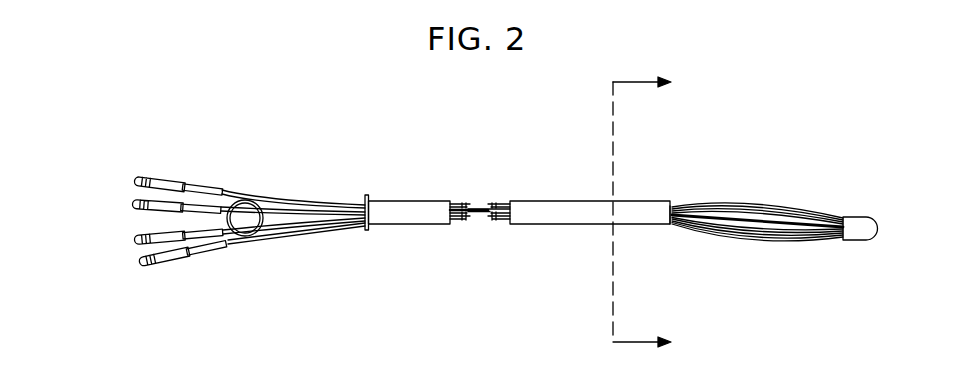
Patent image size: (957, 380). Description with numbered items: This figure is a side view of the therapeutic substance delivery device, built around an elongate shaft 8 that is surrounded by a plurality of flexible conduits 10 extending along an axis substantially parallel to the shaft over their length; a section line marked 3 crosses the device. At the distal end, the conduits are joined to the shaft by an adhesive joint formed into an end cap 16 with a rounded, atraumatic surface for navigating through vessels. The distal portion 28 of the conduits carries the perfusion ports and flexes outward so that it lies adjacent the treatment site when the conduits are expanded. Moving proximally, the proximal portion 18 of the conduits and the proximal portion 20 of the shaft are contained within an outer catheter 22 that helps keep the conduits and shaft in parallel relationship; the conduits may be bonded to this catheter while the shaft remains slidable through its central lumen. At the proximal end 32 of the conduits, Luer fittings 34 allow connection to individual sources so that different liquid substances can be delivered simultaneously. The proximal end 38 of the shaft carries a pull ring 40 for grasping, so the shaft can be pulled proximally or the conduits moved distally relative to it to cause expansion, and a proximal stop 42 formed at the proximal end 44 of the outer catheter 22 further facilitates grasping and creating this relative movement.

The section line 3- 3 is at (642, 214).
The elongate shaft 8 is at (767, 220).
The flexible conduits 10 is at (714, 194).
The end cap 16 is at (865, 217).
The proximal portion of the conduits 18 is at (495, 202).
The proximal portion of the shaft 20 is at (482, 214).
The outer catheter 22 is at (567, 217).
The distal portion of the conduits 28 is at (788, 240).
The proximal end of the conduits 32 is at (220, 196).
The Luer fittings 34 is at (130, 198).
The proximal end of the shaft 38 is at (307, 213).
The pull ring 40 is at (262, 232).
The proximal stop 42 is at (367, 230).
The proximal end of the outer catheter 44 is at (402, 208).